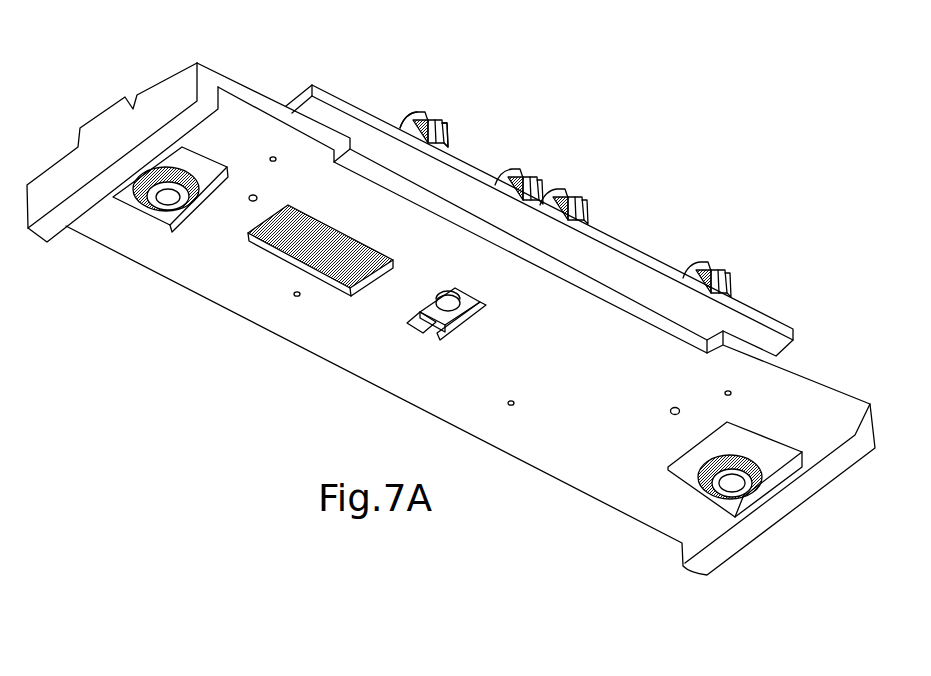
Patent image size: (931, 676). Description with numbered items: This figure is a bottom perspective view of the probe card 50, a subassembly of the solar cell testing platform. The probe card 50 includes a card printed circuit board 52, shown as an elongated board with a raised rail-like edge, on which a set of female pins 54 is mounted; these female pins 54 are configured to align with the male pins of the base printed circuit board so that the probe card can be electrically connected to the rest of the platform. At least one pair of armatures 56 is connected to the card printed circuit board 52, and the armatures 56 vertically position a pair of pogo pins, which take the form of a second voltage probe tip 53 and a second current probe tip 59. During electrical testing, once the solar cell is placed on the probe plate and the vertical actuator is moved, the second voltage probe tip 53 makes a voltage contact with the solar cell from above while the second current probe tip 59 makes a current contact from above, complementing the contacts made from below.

The probe card 50 is at (300, 395).
The card printed circuit board 52 is at (625, 273).
The second voltage probe tip 53 is at (428, 143).
The set of female pins 54 is at (258, 215).
The pair of armatures 56 is at (440, 120).
The second current probe tip 59 is at (447, 147).